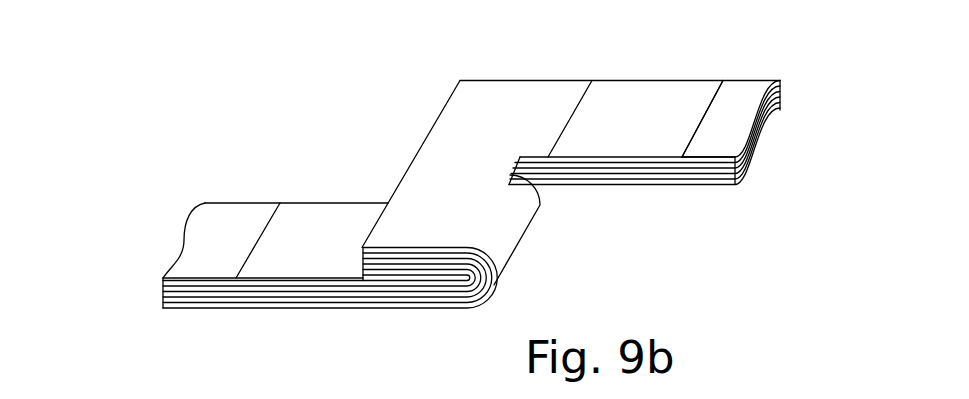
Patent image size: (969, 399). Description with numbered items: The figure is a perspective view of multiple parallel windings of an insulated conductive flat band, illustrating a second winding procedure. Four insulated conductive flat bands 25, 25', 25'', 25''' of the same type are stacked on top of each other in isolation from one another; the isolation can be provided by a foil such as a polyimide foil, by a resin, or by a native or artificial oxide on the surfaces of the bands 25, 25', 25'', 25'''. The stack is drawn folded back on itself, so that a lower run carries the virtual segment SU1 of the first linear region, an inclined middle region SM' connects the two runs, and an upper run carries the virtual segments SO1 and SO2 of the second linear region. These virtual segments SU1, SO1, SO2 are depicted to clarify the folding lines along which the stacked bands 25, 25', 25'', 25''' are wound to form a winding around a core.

The insulated conductive flat band 25 is at (470, 194).
The insulated conductive flat band 25' is at (470, 192).
The insulated conductive flat band 25'' is at (470, 194).
The insulated conductive flat band 25''' is at (469, 193).
The virtual segment of the first linear region SU1 is at (231, 233).
The middle region SM' is at (451, 174).
The virtual segment of the second linear region SO1 is at (622, 97).
The virtual segment of the second linear region SO2 is at (740, 100).